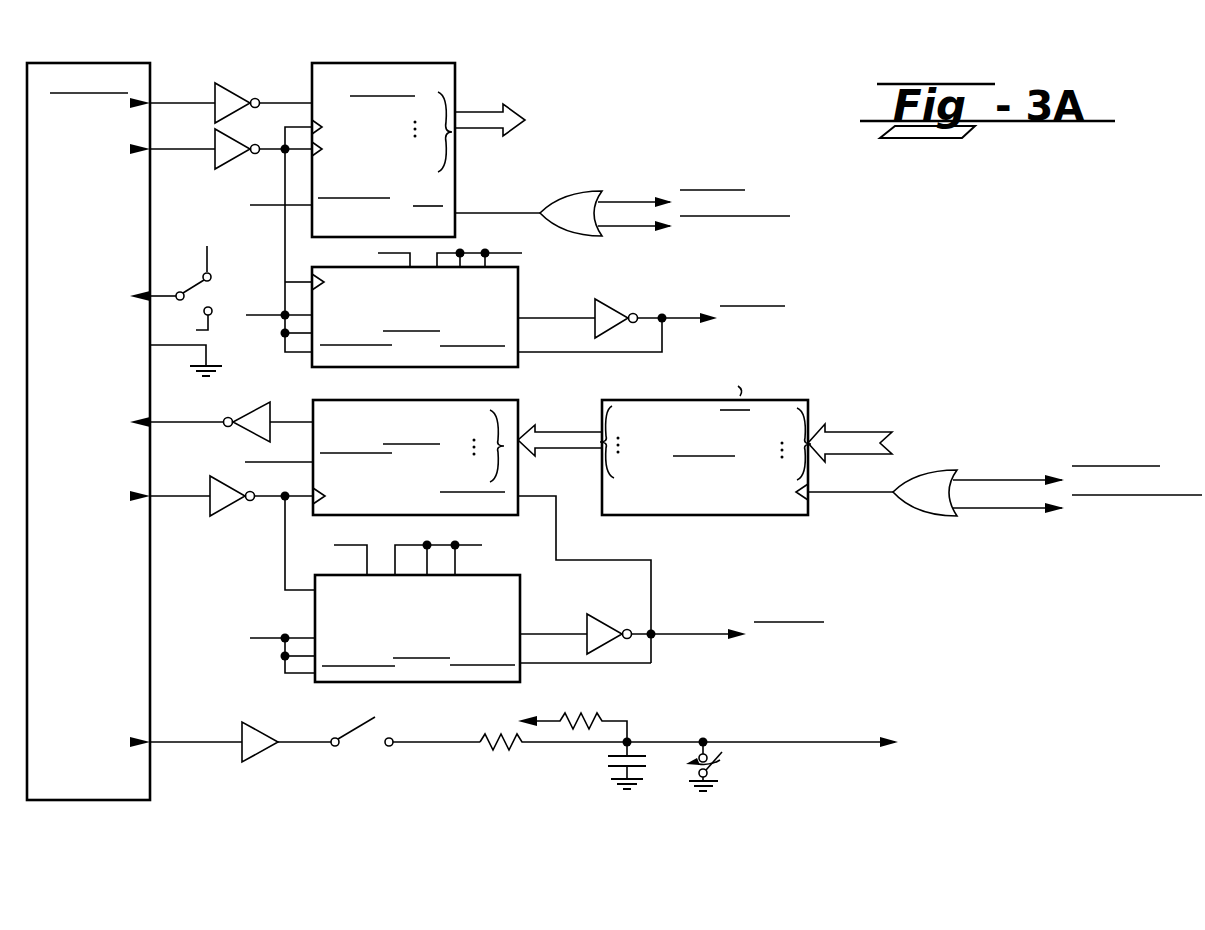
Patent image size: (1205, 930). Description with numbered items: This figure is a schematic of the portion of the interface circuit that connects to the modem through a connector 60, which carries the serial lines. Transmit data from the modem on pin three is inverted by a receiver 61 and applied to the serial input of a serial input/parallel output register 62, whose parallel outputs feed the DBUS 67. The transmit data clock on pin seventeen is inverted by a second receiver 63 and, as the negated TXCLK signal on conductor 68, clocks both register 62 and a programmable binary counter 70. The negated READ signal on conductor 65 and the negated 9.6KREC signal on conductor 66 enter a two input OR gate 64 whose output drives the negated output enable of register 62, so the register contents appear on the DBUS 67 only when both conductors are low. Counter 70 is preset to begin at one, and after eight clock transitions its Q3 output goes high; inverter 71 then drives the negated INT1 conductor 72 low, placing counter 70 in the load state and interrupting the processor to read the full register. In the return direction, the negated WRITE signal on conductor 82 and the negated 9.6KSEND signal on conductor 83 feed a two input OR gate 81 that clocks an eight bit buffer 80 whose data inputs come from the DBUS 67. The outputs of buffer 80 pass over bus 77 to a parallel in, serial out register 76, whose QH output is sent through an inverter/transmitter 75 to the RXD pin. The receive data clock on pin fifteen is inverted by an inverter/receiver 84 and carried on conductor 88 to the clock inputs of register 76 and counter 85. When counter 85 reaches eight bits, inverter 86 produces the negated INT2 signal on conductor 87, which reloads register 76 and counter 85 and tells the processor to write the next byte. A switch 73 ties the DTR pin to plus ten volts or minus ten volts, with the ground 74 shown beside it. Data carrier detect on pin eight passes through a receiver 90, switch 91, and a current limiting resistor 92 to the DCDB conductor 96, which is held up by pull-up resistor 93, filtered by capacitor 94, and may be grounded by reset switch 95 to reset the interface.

The DB-25 connector 60 is at (106, 60).
The RS232 receiver 61 is at (232, 70).
The serial input/parallel output register 62 is at (383, 48).
The RS232 receiver 63 is at (240, 120).
The two input OR gate 64 is at (562, 198).
The conductor 65 is at (612, 186).
The conductor 66 is at (636, 232).
The DBUS 67 is at (468, 90).
The conductor 68 is at (284, 240).
The programmable binary counter 70 is at (440, 368).
The inverter 71 is at (598, 300).
The negated INT1 conductor 72 is at (672, 328).
The switch 73 is at (188, 268).
The ground 74 is at (178, 356).
The RS232 inverter/transmitter 75 is at (246, 410).
The parallel in, serial out register 76 is at (352, 400).
The bus 77 is at (540, 402).
The 8 bit buffer 80 is at (660, 396).
The two input OR gate 81 is at (944, 516).
The conductor 82 is at (1009, 476).
The conductor 83 is at (1010, 510).
The RS232 inverter/receiver 84 is at (222, 512).
The counter 85 is at (494, 563).
The inverter 86 is at (612, 616).
The conductor 87 is at (700, 630).
The conductor 88 is at (282, 550).
The RS232 receiver 90 is at (252, 760).
The switch 91 is at (350, 760).
The current limiting resistor 92 is at (488, 760).
The pull-up resistor 93 is at (570, 706).
The capacitor 94 is at (604, 766).
The reset switch 95 is at (722, 768).
The buffered data carrier detect (DCDB) conductor 96 is at (764, 742).